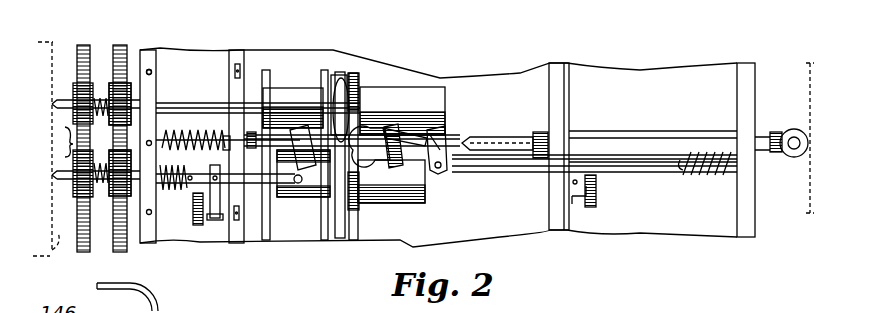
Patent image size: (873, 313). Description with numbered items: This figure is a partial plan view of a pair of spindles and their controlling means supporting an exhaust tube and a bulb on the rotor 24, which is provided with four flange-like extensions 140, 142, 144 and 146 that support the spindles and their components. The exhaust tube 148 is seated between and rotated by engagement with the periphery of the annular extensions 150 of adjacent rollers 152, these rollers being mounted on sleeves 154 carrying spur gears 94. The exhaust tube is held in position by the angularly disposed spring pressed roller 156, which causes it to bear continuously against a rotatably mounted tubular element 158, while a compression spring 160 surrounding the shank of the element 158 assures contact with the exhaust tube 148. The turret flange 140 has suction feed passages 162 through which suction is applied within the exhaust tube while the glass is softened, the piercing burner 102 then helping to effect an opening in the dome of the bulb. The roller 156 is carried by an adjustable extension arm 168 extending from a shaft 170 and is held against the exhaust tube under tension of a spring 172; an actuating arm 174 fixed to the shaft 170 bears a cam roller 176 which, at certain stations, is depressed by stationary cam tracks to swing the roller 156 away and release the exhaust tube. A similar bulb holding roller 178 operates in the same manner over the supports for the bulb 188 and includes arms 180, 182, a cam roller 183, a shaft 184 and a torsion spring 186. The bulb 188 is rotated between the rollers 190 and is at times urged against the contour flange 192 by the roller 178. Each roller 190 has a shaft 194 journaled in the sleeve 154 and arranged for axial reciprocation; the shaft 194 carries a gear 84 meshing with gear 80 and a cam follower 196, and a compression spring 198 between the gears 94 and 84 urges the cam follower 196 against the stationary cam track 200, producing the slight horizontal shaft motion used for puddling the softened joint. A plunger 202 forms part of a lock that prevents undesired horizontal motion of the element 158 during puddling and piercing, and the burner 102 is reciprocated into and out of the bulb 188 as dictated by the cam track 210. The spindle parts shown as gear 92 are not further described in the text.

The rotor 24 is at (512, 208).
The gear 80 is at (84, 48).
The gear 84 is at (55, 138).
The gear 92 is at (119, 48).
The spur gear 94 is at (108, 95).
The piercing burner 102 is at (497, 139).
The flange-like extension 140 is at (148, 54).
The flange-like extension 142 is at (234, 55).
The flange-like extension 144 is at (561, 63).
The flange-like extension 146 is at (745, 63).
The exhaust tube 148 is at (328, 73).
The annular extension 150 is at (266, 70).
The roller 152 is at (280, 88).
The sleeve 154 is at (196, 102).
The spring pressed roller 156 is at (297, 127).
The tubular element 158 is at (250, 140).
The compression spring 160 is at (180, 132).
The suction feed passage 162 is at (153, 70).
The adjustable extension arm 168 is at (305, 197).
The shaft 170 is at (262, 184).
The spring 172 is at (190, 183).
The actuating arm 174 is at (216, 222).
The cam roller 176 is at (200, 227).
The bulb holding roller 178 is at (397, 167).
The arm 180 is at (440, 133).
The arm 182 is at (580, 200).
The cam roller 183 is at (596, 190).
The shaft 184 is at (645, 178).
The torsion spring 186 is at (730, 176).
The bulb 188 is at (377, 150).
The roller 190 is at (422, 90).
The contour flange 192 is at (357, 75).
The shaft 194 is at (67, 100).
The cam follower 196 is at (52, 103).
The compression spring 198 is at (104, 120).
The cam track 200 is at (52, 253).
The plunger 202 is at (239, 64).
The cam track 210 is at (807, 183).